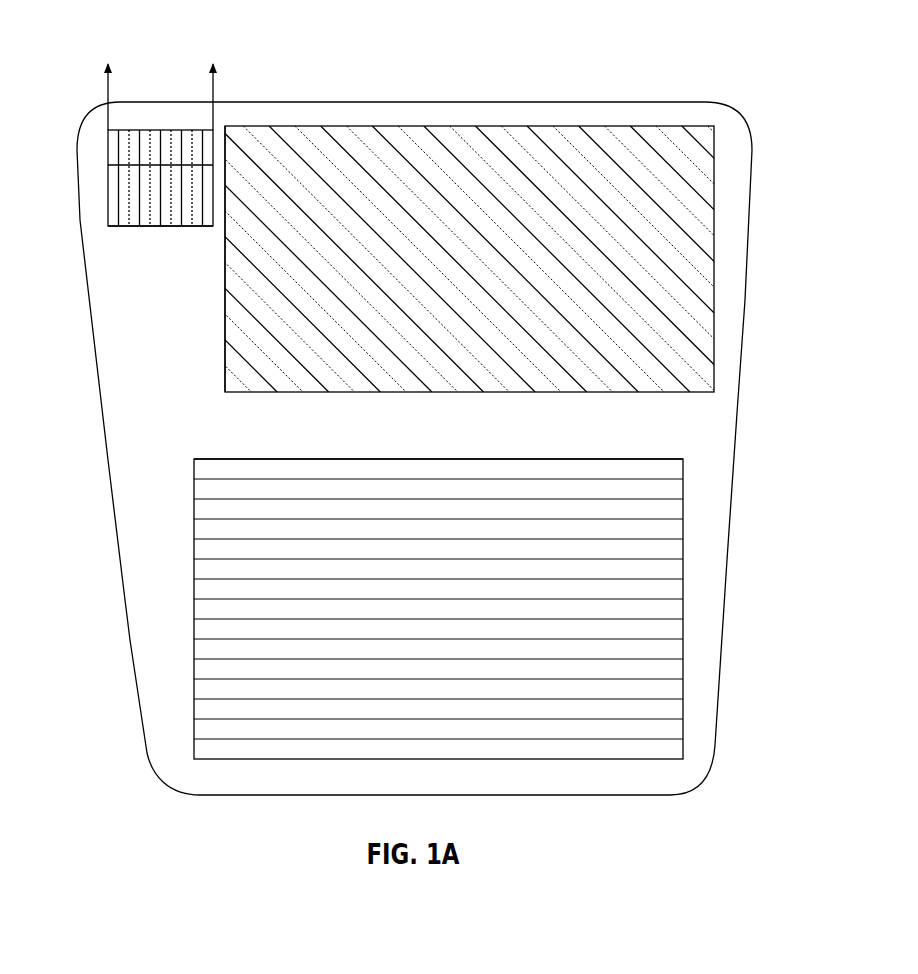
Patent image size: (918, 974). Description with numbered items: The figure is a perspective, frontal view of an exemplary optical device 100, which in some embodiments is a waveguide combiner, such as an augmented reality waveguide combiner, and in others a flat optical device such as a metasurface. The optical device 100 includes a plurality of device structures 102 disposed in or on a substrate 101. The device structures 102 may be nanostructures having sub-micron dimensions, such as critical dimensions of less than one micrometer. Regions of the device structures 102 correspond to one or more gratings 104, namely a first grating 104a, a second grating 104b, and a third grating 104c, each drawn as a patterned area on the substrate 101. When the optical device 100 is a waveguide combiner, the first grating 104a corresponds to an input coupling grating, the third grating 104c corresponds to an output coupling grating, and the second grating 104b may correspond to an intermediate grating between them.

The optical device 100 is at (459, 409).
The substrate 101 is at (720, 417).
The device structures 102 is at (154, 228).
The gratings 104 is at (207, 228).
The first grating 104a is at (117, 232).
The second grating 104b is at (223, 351).
The third grating 104c is at (443, 456).